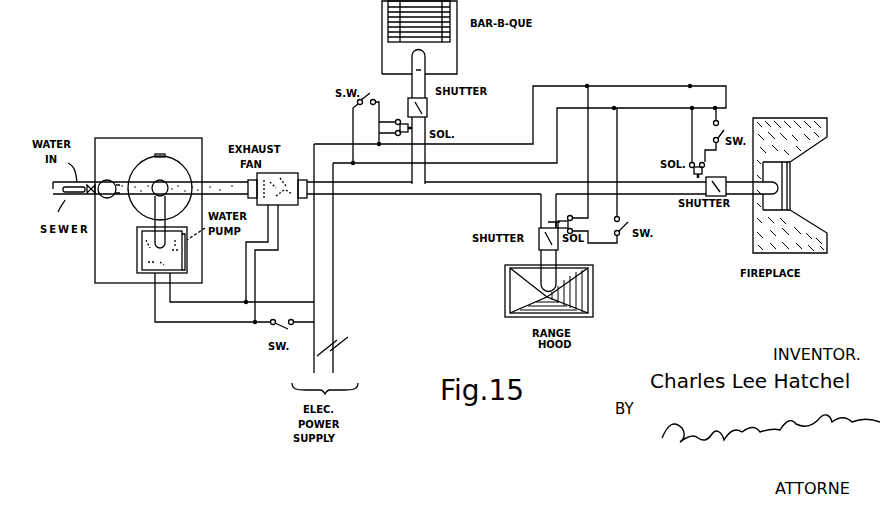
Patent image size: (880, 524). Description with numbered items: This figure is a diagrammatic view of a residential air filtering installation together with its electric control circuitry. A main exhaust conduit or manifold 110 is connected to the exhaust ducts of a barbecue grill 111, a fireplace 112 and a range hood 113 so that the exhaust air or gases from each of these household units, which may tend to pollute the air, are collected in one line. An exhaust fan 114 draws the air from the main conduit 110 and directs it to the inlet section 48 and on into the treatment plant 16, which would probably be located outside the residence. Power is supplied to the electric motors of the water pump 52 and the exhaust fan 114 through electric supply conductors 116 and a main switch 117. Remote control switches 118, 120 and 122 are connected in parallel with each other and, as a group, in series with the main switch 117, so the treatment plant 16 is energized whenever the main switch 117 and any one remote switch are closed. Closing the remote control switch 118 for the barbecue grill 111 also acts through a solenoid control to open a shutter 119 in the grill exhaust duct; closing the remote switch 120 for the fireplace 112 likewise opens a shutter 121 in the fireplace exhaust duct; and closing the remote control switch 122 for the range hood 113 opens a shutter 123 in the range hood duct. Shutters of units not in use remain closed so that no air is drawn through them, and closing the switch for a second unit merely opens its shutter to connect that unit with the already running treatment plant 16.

The treatment plant 16 is at (152, 131).
The inlet section 48 is at (209, 181).
The water pump 52 is at (140, 257).
The main exhaust conduit 110 is at (433, 188).
The barbecue grill 111 is at (449, 56).
The fireplace 112 is at (795, 237).
The range hood 113 is at (593, 293).
The exhaust fan 114 is at (288, 172).
The electric supply conductors 116 is at (336, 362).
The main switch 117 is at (277, 328).
The remote control switch 118 is at (370, 93).
The shutter 119 is at (428, 107).
The remote control switch 120 is at (725, 132).
The shutter 121 is at (714, 177).
The remote control switch 122 is at (646, 213).
The shutter 123 is at (540, 232).